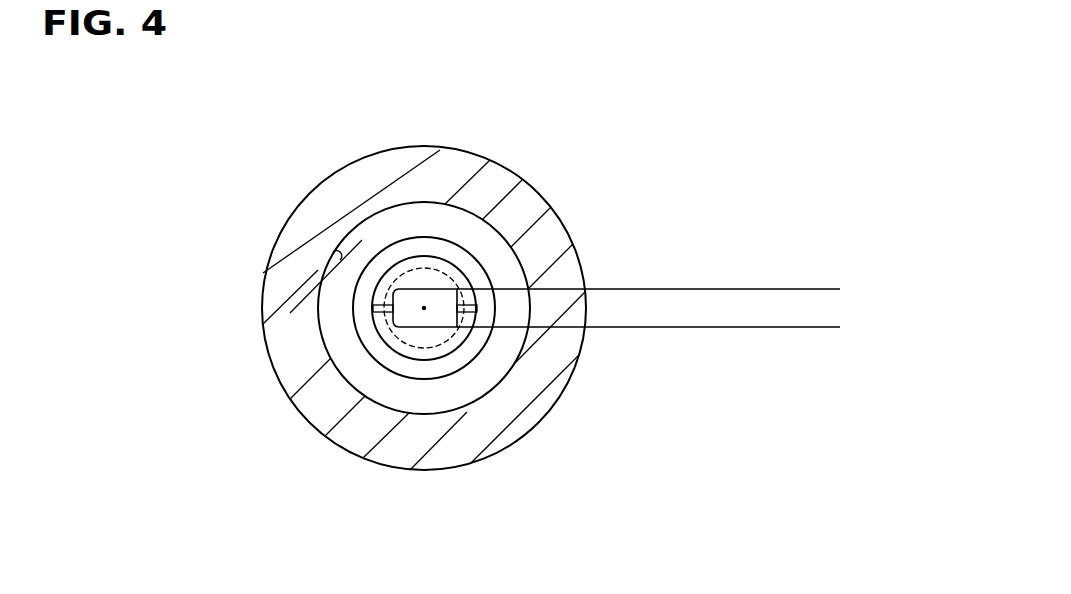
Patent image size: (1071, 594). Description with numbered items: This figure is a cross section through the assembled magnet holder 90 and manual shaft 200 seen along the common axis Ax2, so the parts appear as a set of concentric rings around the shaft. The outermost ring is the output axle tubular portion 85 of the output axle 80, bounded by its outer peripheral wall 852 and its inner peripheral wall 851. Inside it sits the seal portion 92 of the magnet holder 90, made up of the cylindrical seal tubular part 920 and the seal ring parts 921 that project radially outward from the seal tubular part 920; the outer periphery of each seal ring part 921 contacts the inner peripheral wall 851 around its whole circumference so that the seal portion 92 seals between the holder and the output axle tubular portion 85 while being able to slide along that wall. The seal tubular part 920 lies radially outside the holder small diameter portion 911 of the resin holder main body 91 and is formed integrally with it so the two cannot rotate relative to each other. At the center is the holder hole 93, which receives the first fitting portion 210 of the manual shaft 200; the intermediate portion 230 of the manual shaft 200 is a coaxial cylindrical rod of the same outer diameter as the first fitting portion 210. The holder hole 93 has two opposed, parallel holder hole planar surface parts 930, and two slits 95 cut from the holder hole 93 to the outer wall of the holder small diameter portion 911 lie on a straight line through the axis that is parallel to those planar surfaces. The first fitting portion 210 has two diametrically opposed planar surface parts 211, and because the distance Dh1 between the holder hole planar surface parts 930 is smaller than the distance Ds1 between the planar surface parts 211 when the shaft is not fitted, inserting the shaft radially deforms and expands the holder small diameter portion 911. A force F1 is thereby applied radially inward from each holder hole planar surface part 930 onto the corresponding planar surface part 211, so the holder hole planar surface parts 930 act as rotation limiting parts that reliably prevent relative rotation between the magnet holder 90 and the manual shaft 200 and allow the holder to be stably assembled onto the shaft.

The output axle 80 is at (320, 203).
The outer peripheral wall of the output axle tubular portion 852 is at (288, 220).
The output axle tubular portion 85 is at (298, 247).
The inner peripheral wall of the output axle tubular portion 851 is at (328, 265).
The magnet holder 90 is at (407, 205).
The seal portion 92 is at (459, 256).
The seal tubular part 920 is at (384, 253).
The seal ring parts 921 is at (348, 248).
The manual shaft 200 is at (378, 345).
The holder hole 93 is at (377, 304).
The holder hole planar surface parts 930 is at (378, 315).
The slits 95 is at (373, 308).
The planar surface parts 211 is at (477, 240).
The first fitting portion 210 is at (443, 357).
The intermediate portion 230 is at (335, 375).
The holder main body 91 is at (405, 414).
The holder small diameter portion 911 is at (455, 345).
The axis Ax2 is at (424, 308).
The force F1 is at (424, 276).
The distance between the two holder hole planar surface parts Dh1 is at (732, 252).
The distance between the two planar surface parts Ds1 is at (803, 252).